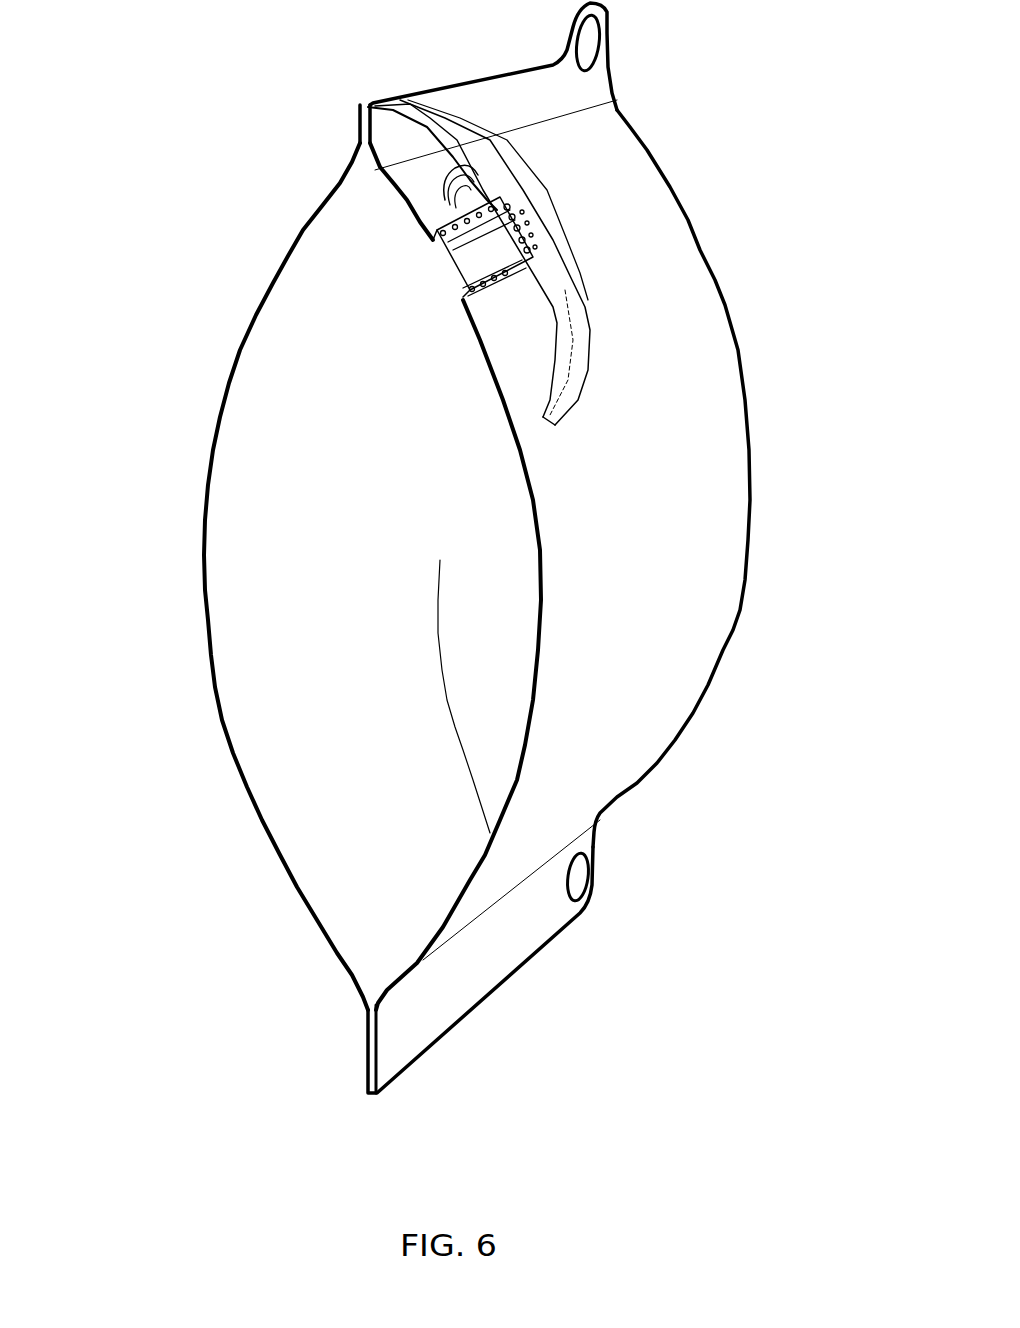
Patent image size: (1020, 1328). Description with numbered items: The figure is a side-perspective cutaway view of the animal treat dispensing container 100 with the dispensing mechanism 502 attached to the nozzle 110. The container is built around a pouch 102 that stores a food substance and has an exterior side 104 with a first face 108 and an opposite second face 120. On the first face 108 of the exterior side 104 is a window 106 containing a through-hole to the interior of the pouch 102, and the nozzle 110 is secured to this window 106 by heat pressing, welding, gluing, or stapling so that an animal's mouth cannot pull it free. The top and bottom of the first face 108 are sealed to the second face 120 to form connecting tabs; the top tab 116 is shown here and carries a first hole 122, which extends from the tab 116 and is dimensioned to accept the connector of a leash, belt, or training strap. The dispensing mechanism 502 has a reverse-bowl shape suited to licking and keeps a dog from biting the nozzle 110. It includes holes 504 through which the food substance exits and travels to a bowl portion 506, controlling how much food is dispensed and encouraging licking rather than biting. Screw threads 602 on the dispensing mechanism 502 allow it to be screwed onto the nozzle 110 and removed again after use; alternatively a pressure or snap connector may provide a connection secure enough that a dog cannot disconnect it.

The animal treat dispensing container 100 is at (218, 67).
The pouch 102 is at (137, 472).
The exterior side 104 is at (732, 315).
The window 106 is at (433, 241).
The first face 108 is at (536, 530).
The nozzle 110 is at (467, 258).
The top tab 116 is at (483, 82).
The second face 120 is at (217, 685).
The first hole 122 is at (588, 48).
The dispensing mechanism 502 is at (573, 137).
The holes 504 is at (513, 210).
The bowl portion 506 is at (590, 315).
The screw threads 602 is at (465, 287).